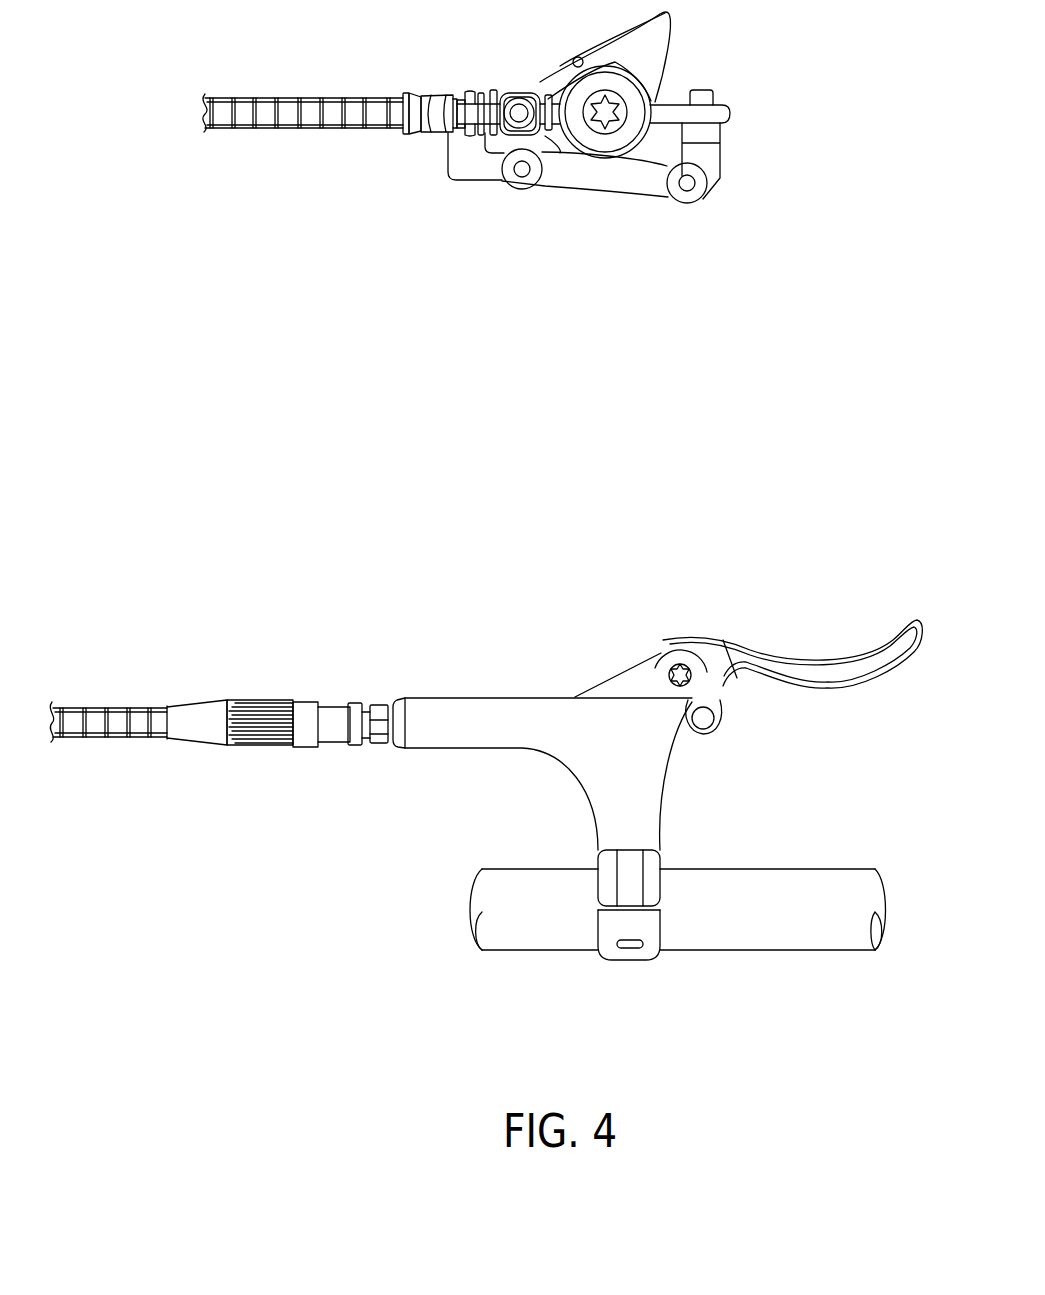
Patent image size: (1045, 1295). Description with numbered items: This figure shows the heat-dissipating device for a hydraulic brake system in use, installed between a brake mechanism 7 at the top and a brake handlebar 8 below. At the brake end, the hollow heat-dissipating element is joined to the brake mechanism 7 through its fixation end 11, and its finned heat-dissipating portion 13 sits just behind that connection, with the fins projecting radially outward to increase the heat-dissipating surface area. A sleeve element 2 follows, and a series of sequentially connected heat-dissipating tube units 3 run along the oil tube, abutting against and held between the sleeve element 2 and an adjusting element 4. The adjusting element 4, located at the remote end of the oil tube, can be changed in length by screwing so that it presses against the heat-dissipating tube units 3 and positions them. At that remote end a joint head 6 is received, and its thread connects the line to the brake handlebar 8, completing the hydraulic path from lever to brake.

The sleeve element 2 is at (434, 128).
The heat-dissipating tube unit 3 is at (331, 120).
The adjusting element 4 is at (279, 692).
The joint head 6 is at (381, 703).
The brake mechanism 7 is at (707, 48).
The brake handlebar 8 is at (702, 611).
The fixation end 11 is at (516, 99).
The heat-dissipating portion 13 is at (481, 99).